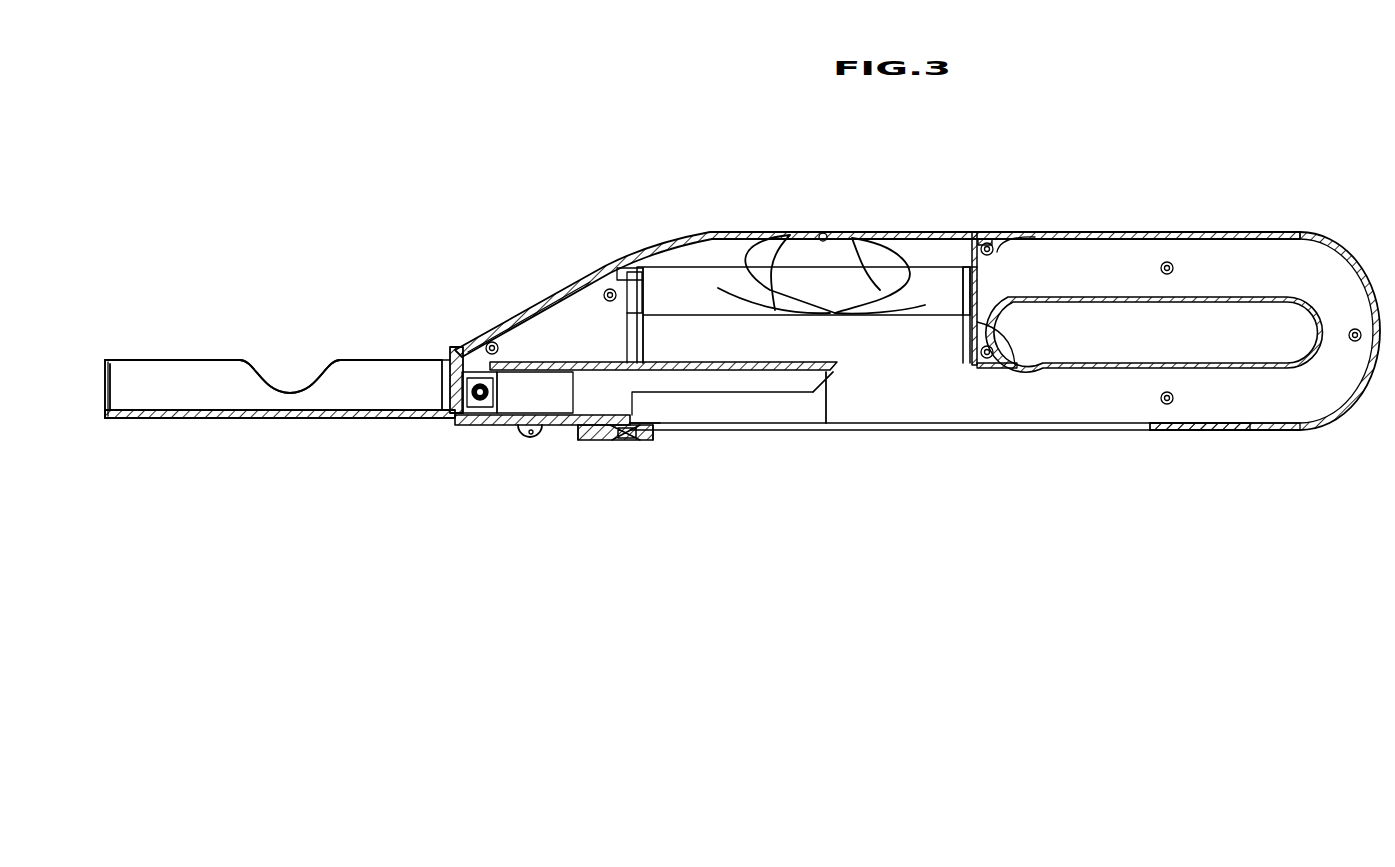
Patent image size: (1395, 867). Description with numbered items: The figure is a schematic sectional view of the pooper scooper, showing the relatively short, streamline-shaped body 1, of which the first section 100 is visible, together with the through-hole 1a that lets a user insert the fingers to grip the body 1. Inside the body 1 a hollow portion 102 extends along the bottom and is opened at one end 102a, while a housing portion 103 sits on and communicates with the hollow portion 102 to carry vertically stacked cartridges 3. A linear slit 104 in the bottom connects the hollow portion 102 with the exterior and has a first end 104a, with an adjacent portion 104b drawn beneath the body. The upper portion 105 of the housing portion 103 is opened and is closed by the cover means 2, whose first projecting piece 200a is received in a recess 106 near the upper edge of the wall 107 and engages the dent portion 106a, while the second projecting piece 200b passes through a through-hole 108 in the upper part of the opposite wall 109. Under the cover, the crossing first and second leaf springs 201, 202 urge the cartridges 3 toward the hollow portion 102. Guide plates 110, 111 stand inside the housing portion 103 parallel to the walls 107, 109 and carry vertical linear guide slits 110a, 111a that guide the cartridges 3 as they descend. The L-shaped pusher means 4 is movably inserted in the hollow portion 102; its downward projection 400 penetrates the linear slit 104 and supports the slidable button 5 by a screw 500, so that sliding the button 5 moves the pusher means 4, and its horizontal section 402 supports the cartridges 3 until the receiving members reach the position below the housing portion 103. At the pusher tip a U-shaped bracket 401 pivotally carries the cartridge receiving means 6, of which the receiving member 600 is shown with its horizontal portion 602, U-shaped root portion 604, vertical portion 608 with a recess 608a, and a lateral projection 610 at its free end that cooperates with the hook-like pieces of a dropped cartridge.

The body 1 is at (1160, 231).
The through-hole 1a is at (1217, 349).
The cover means 2 is at (900, 226).
The cartridges 3 is at (738, 343).
The pusher means 4 is at (778, 396).
The slidable button 5 is at (597, 448).
The cartridge receiving means 6 is at (215, 350).
The first section 100 is at (1303, 235).
The hollow portion 102 is at (890, 408).
The one end of hollow portion 102a is at (462, 426).
The housing portion 103 is at (648, 287).
The linear slit 104 is at (967, 427).
The first end of linear slit 104a is at (1150, 428).
The bottom wall front portion 104b is at (610, 441).
The upper portion of housing portion 105 is at (656, 272).
The recess 106 is at (603, 268).
The dent portion 106a is at (603, 277).
The wall of housing portion 107 is at (592, 441).
The through-hole 108 is at (965, 300).
The wall of housing portion 109 is at (1003, 352).
The guide plate 110 is at (690, 234).
The linear guide slit 110a is at (708, 236).
The guide plate 111 is at (953, 294).
The linear guide slit 111a is at (952, 250).
The first projecting piece 200a is at (567, 340).
The second projecting piece 200b is at (1035, 240).
The first leaf spring 201 is at (880, 275).
The second leaf spring 202 is at (782, 262).
The projection 400 is at (630, 441).
The bracket 401 is at (488, 426).
The horizontal section 402 is at (826, 392).
The screw 500 is at (620, 441).
The cartridge receiving member 600 is at (373, 352).
The horizontal portion 602 is at (168, 417).
The root portion 604 is at (450, 345).
The vertical portion 608 is at (160, 368).
The recess 608a is at (258, 378).
The projection 610 is at (104, 392).